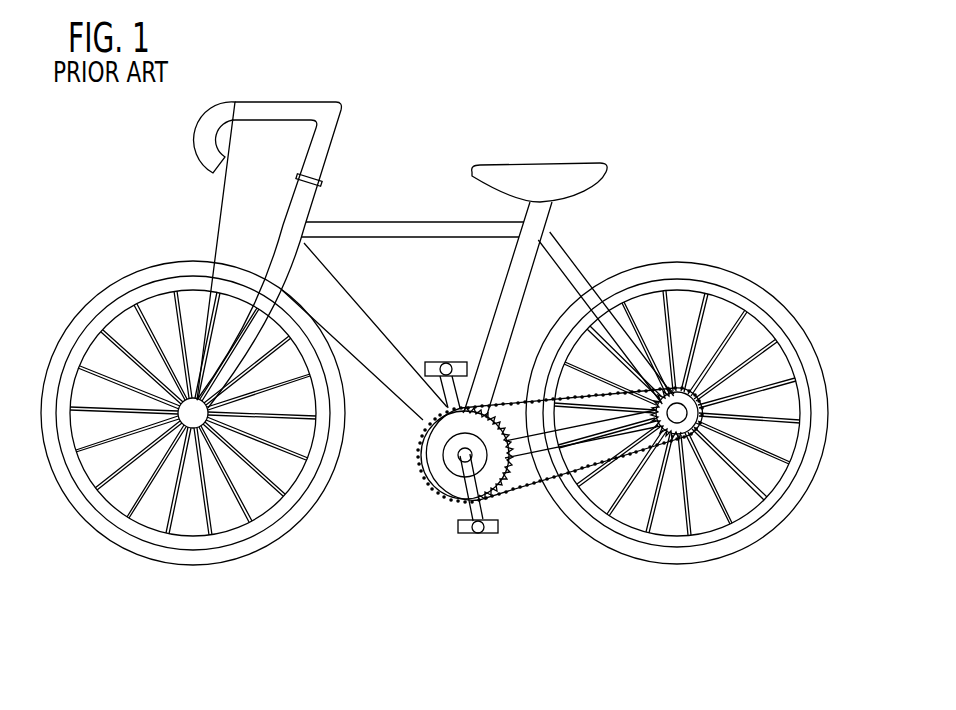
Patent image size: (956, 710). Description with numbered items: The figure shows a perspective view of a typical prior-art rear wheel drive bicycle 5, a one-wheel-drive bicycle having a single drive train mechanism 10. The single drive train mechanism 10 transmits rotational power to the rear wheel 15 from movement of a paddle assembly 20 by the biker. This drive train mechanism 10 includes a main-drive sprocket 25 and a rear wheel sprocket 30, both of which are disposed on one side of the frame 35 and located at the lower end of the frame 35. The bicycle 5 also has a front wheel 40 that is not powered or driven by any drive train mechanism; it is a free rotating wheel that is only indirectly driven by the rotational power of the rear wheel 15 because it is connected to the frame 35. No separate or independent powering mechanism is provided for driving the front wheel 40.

The rear wheel drive bicycle 5 is at (652, 126).
The single drive train mechanism 10 is at (530, 523).
The rear wheel 15 is at (700, 278).
The paddle assembly 20 is at (459, 534).
The main-drive sprocket 25 is at (441, 476).
The rear wheel sprocket 30 is at (676, 428).
The frame 35 is at (377, 232).
The front wheel 40 is at (166, 278).